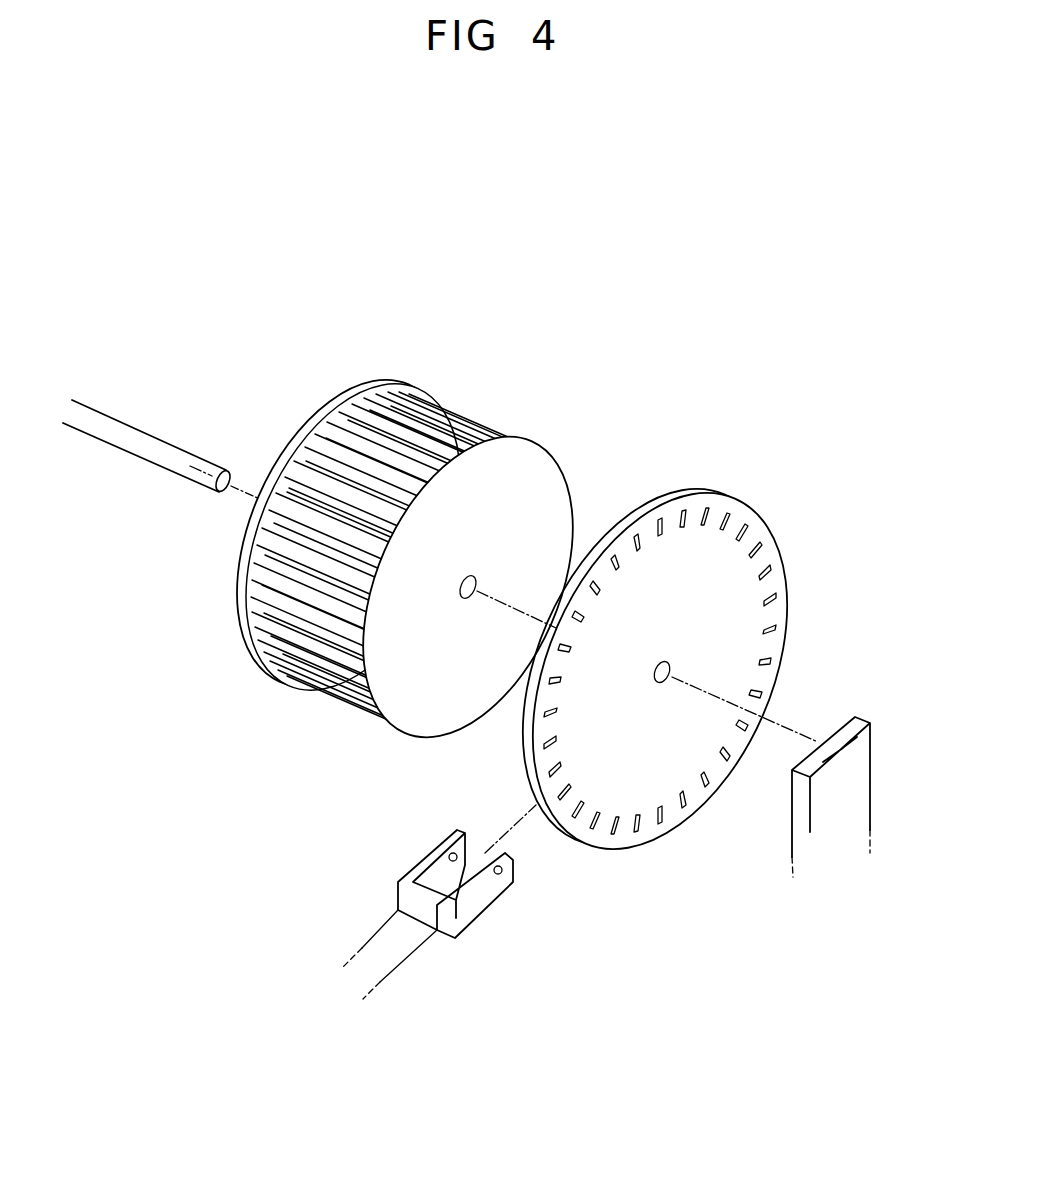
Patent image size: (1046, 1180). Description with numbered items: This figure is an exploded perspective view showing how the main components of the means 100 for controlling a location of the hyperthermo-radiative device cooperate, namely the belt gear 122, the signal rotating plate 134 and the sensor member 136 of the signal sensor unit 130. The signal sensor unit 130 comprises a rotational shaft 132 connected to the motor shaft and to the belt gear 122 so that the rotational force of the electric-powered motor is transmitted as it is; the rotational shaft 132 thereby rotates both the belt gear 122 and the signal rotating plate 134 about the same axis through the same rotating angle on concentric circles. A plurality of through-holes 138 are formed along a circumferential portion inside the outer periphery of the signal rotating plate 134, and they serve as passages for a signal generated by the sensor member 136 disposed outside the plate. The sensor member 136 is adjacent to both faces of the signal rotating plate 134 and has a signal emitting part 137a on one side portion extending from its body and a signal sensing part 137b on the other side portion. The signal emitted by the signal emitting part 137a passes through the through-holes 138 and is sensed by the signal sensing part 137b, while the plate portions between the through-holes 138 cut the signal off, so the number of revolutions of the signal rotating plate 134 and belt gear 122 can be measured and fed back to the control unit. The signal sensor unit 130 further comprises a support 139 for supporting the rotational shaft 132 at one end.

The means for controlling a location of the hyperthermo-radiative device 100 is at (568, 253).
The belt gear 122 is at (540, 472).
The signal sensor unit 130 is at (669, 654).
The rotational shaft 132 is at (162, 449).
The signal rotating plate 134 is at (636, 793).
The sensor member 136 is at (432, 902).
The signal emitting part 137a is at (450, 858).
The signal sensing part 137b is at (500, 876).
The through-holes 138 is at (773, 592).
The support 139 is at (852, 768).